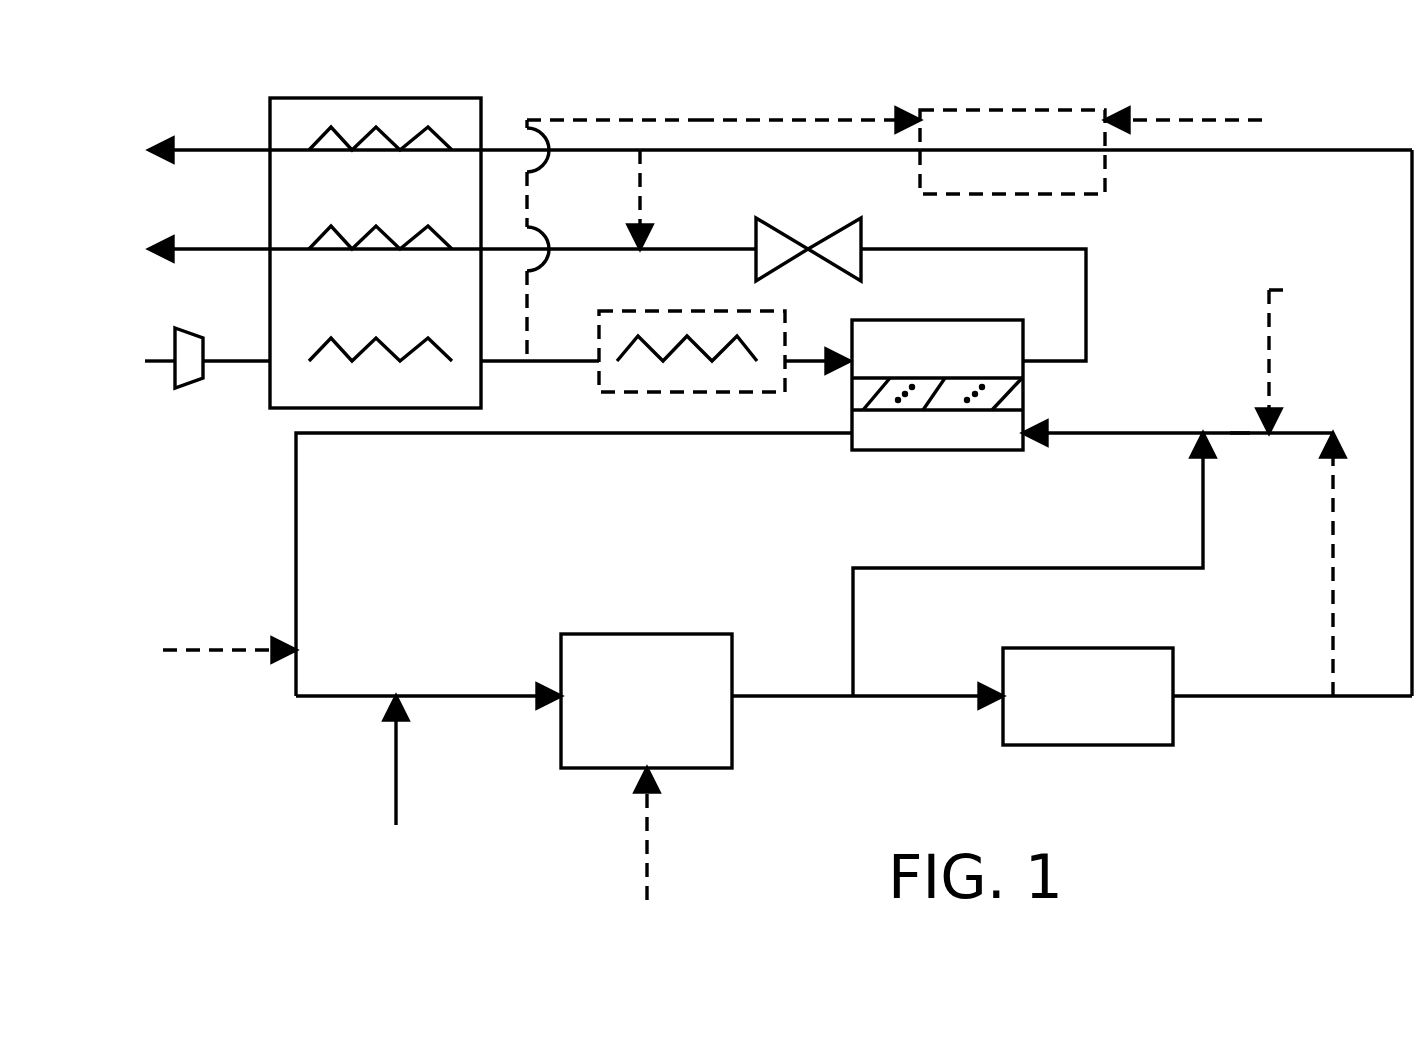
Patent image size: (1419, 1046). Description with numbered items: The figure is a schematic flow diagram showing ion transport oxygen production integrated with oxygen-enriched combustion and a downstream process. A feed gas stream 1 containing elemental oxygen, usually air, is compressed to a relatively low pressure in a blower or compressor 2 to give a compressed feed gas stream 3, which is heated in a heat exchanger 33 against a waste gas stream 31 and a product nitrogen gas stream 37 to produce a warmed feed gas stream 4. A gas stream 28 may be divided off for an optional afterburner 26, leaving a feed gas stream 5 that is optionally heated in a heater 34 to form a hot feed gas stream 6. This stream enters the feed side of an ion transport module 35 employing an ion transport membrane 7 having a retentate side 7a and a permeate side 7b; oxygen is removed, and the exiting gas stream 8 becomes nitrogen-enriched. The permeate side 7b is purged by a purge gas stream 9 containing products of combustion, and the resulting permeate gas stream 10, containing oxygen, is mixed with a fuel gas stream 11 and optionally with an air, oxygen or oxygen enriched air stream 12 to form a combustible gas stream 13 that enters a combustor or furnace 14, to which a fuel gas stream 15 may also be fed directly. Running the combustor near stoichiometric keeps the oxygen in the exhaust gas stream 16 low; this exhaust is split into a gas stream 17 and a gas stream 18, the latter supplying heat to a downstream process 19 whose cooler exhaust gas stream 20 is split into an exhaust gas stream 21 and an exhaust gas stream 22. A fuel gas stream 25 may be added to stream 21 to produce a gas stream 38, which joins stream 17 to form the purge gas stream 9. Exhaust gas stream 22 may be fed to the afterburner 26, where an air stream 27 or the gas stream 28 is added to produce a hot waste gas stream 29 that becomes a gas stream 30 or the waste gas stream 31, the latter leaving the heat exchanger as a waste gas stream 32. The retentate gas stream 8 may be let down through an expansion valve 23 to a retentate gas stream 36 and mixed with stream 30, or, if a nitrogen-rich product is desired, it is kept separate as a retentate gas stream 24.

The feed gas stream 1 is at (154, 355).
The blower or compressor 2 is at (186, 338).
The compressed feed gas stream 3 is at (220, 358).
The warmed feed gas stream 4 is at (507, 361).
The feed gas stream 5 is at (568, 361).
The hot feed gas stream 6 is at (808, 361).
The ion transport membrane 7 is at (1023, 393).
The retentate side 7a is at (938, 378).
The permeate side 7b is at (942, 410).
The exiting gas stream 8 is at (1086, 322).
The purge gas stream 9 is at (1150, 433).
The permeate gas stream 10 is at (296, 480).
The fuel gas stream 11 is at (396, 777).
The air, oxygen or oxygen enriched air stream 12 is at (230, 652).
The combustible gas stream 13 is at (480, 696).
The combustor or furnace 14 is at (672, 634).
The fuel gas stream 15 is at (650, 858).
The exhaust gas stream 16 is at (786, 696).
The gas stream 17 is at (955, 568).
The gas stream 18 is at (919, 696).
The downstream process 19 is at (1148, 648).
The exhaust gas stream 20 is at (1273, 696).
The exhaust gas stream 21 is at (1333, 552).
The exhaust gas stream 22 is at (1412, 197).
The expansion valve 23 is at (862, 235).
The retentate gas stream 24 is at (226, 249).
The fuel gas stream 25 is at (1290, 290).
The afterburner 26 is at (1040, 110).
The air stream 27 is at (1209, 120).
The gas stream 28 is at (780, 118).
The hot waste gas stream 29 is at (857, 150).
The gas stream 30 is at (642, 228).
The waste gas stream 31 is at (577, 148).
The waste gas stream 32 is at (230, 150).
The heat exchanger 33 is at (425, 408).
The heater 34 is at (720, 311).
The ion transport module 35 is at (962, 390).
The retentate gas stream 36 is at (720, 249).
The product nitrogen gas stream 37 is at (579, 247).
The gas stream 38 is at (1240, 433).